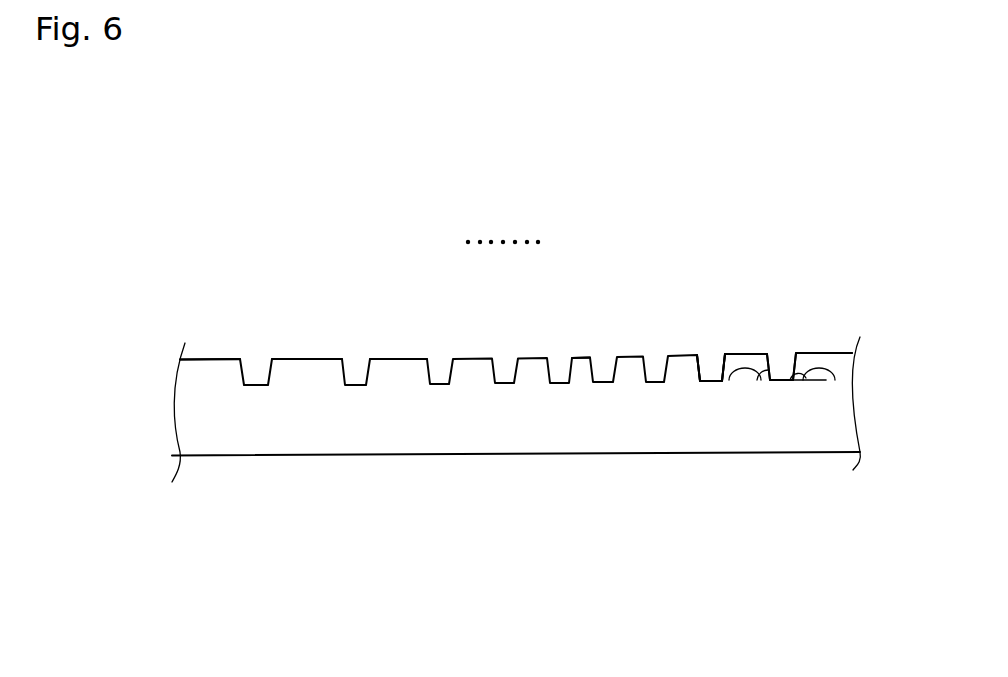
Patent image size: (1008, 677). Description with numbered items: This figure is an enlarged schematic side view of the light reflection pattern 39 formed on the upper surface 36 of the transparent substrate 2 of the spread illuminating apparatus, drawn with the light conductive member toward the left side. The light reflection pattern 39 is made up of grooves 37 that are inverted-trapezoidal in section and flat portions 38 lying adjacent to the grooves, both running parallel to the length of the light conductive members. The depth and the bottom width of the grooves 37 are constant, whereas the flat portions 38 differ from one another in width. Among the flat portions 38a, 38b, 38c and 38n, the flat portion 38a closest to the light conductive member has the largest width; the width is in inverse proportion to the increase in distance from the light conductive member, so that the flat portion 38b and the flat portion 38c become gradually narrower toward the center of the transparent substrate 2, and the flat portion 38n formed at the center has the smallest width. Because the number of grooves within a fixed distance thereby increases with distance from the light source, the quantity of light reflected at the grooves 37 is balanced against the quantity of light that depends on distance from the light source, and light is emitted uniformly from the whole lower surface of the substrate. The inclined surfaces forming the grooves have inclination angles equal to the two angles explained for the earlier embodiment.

The transparent substrate 2 is at (387, 420).
The upper surface 36 is at (832, 353).
The grooves 37 is at (708, 376).
The flat portions 38 is at (747, 354).
The flat portion 38a is at (208, 358).
The flat portion 38b is at (300, 358).
The flat portion 38c is at (398, 358).
The flat portion 38n is at (580, 357).
The light reflection pattern 39 is at (805, 210).